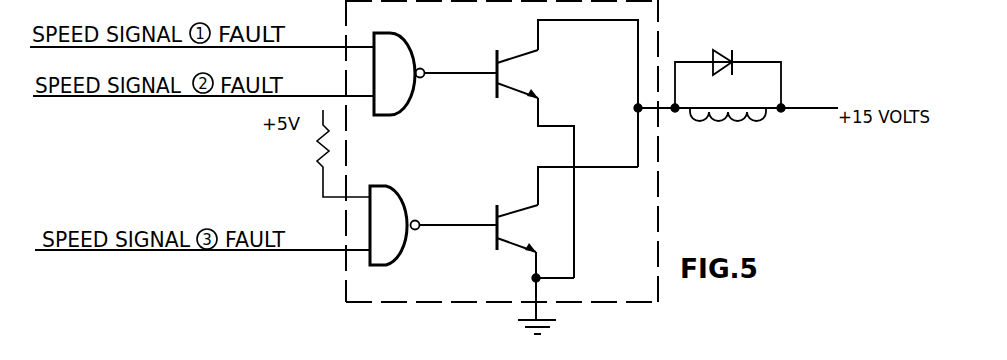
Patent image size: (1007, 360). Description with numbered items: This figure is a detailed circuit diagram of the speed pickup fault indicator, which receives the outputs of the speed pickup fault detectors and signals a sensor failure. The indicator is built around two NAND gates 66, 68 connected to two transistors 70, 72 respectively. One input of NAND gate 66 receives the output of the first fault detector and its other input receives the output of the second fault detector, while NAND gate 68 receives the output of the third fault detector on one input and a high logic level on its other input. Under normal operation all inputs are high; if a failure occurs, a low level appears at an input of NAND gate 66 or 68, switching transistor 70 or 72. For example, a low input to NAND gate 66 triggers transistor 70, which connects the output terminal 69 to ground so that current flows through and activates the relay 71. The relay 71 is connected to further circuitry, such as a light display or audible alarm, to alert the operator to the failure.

The NAND gate 66 is at (401, 51).
The NAND gate 68 is at (400, 206).
The transistor 70 is at (499, 83).
The transistor 72 is at (499, 236).
The output terminal 69 is at (677, 113).
The relay 71 is at (771, 120).